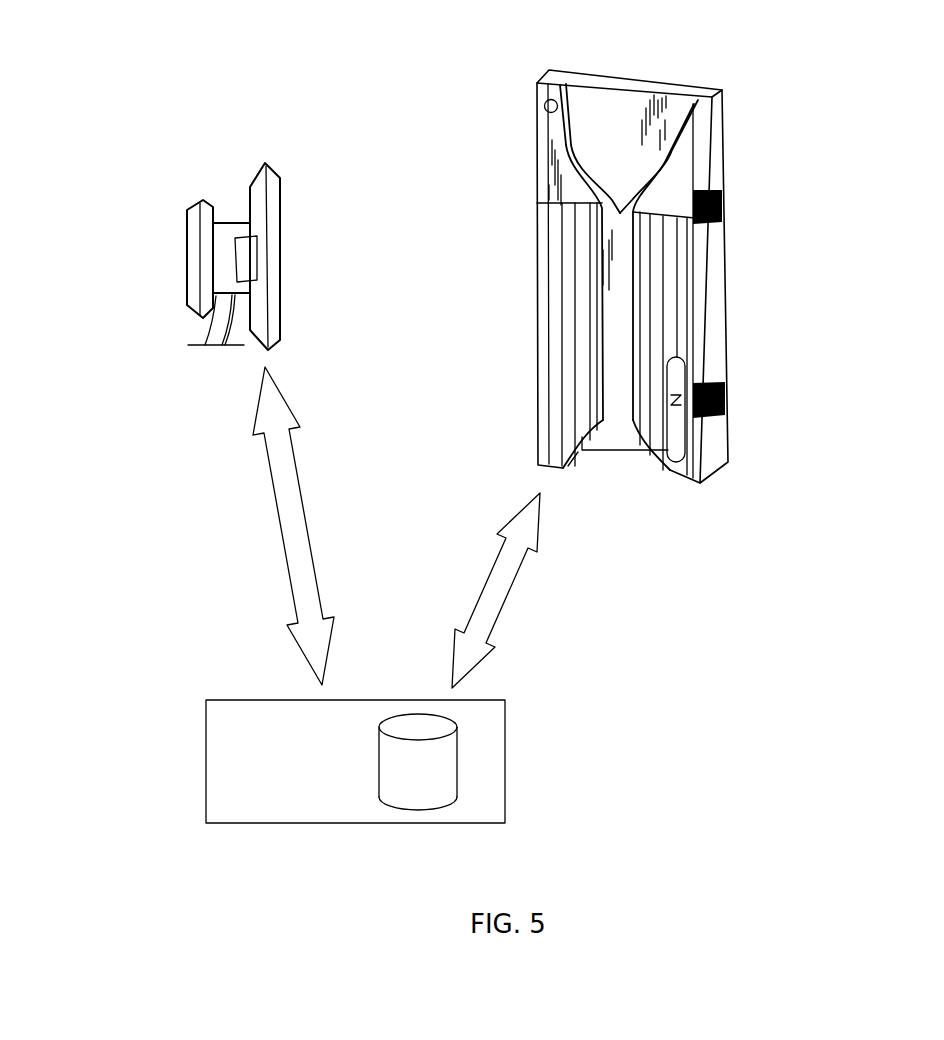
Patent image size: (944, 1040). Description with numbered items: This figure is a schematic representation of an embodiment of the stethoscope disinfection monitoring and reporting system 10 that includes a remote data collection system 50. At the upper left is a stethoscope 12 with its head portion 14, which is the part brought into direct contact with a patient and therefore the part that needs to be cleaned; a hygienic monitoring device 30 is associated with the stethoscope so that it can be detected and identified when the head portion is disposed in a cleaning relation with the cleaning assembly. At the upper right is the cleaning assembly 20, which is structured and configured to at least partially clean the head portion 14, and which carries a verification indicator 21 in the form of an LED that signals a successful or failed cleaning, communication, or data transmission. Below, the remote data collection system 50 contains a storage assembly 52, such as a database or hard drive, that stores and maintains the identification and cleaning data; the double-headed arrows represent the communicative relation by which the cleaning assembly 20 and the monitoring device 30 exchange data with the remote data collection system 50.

The stethoscope disinfection monitoring and reporting system 10 is at (455, 75).
The stethoscope 12 is at (147, 310).
The head portion 14 is at (283, 150).
The cleaning assembly 20 is at (767, 123).
The verification indicator 21 is at (551, 106).
The hygienic monitoring device 30 is at (242, 240).
The remote data collection system 50 is at (507, 730).
The storage assembly 52 is at (378, 778).